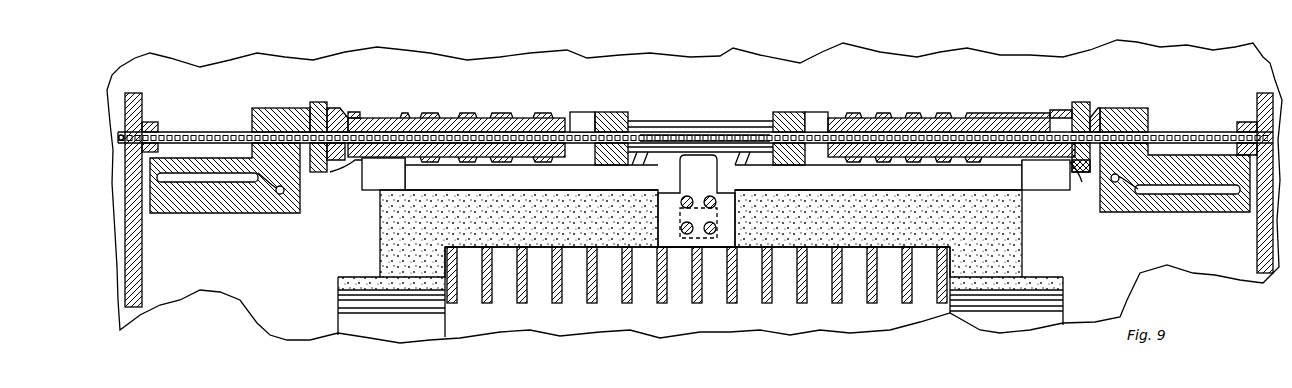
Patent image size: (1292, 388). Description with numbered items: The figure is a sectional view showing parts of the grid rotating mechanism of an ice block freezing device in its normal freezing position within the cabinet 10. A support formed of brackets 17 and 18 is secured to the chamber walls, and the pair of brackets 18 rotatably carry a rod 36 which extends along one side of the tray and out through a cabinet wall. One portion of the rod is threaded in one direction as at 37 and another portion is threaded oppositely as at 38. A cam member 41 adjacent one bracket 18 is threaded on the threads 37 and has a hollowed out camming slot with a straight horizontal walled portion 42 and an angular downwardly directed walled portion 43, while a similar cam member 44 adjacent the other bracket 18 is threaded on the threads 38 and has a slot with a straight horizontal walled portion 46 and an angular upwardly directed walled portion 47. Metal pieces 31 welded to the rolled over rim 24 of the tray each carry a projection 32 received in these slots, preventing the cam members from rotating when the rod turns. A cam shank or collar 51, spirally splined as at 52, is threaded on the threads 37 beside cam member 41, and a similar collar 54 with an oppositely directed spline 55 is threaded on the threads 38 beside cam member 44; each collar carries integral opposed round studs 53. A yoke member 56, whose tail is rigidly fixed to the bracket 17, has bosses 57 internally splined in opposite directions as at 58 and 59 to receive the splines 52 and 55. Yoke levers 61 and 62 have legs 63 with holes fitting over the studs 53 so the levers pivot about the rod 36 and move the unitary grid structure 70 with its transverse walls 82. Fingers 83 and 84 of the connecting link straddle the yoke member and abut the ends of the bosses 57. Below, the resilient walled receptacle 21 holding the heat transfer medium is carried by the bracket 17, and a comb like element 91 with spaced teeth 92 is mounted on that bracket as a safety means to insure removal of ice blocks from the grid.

The cabinet 10 is at (250, 310).
The bracket 17 is at (1063, 312).
The bracket 18 is at (142, 267).
The resilient walled receptacle 21 is at (1025, 243).
The rolled over rim 24 is at (672, 176).
The metal pieces 31 is at (408, 176).
The projection 32 is at (340, 182).
The rod 36 is at (667, 125).
The threads 37 is at (207, 130).
The threads 38 is at (1192, 130).
The cam member 41 is at (270, 108).
The straight horizontal walled portion 42 is at (214, 182).
The angular downwardly directed walled portion 43 is at (272, 192).
The cam member 44 is at (1130, 108).
The straight horizontal walled portion 46 is at (1200, 194).
The angular upwardly directed walled portion 47 is at (1124, 194).
The cam shank or collar 51 is at (396, 118).
The spline 52 is at (518, 118).
The studs 53 is at (318, 102).
The cam shank or collar 54 is at (1040, 118).
The spline 55 is at (905, 118).
The yoke member 56 is at (714, 130).
The bosses 57 is at (612, 112).
The internal spline 58 is at (605, 165).
The internal spline 59 is at (798, 165).
The yoke lever 61 is at (356, 113).
The yoke lever 62 is at (1052, 110).
The legs 63 is at (336, 108).
The unitary grid structure 70 is at (890, 160).
The transverse walls 82 is at (526, 160).
The finger 83 is at (583, 112).
The finger 84 is at (818, 112).
The comb like element 91 is at (873, 318).
The teeth 92 is at (592, 303).